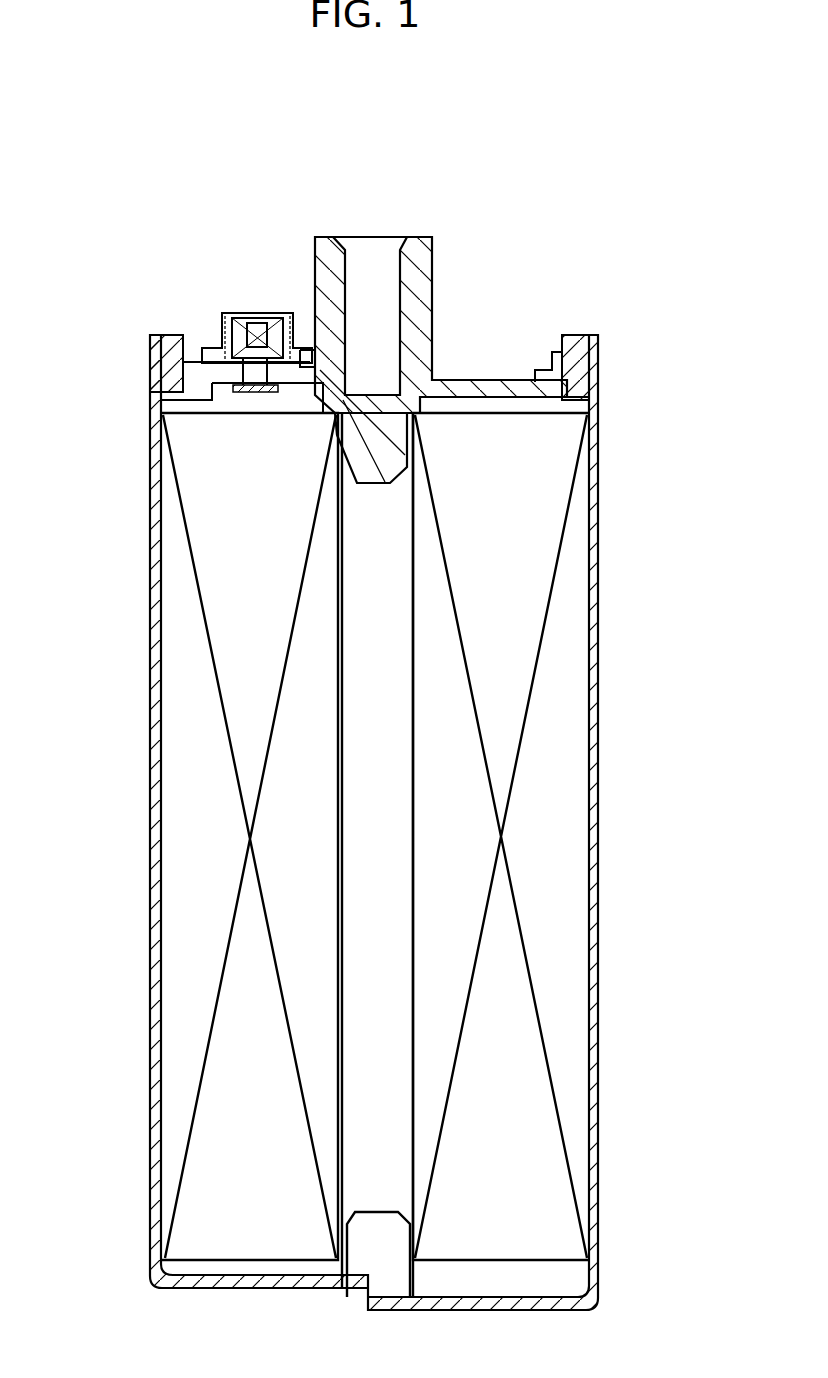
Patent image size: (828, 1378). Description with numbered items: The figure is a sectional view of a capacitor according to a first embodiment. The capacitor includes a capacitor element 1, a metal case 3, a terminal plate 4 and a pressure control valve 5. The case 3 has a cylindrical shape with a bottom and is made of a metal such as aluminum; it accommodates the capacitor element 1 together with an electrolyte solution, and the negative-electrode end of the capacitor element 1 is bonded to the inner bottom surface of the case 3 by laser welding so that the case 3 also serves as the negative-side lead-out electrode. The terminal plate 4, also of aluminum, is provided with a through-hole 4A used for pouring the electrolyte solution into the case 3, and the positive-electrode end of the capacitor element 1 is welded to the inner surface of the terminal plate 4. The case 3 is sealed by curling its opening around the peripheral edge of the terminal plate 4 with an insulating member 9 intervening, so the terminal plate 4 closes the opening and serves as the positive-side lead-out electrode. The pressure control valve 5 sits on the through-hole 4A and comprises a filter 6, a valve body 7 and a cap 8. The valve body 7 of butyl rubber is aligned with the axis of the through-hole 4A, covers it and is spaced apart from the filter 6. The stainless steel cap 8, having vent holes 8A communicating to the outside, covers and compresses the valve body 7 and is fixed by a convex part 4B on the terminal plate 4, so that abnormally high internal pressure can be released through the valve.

The capacitor element 1 is at (572, 580).
The metal case 3 is at (600, 840).
The terminal plate 4 is at (430, 300).
The through-hole 4A is at (245, 382).
The convex part 4B is at (308, 352).
The pressure control valve 5 is at (288, 307).
The filter 6 is at (248, 398).
The valve body 7 is at (245, 367).
The cap 8 is at (222, 335).
The vent holes 8A is at (222, 325).
The insulating member 9 is at (598, 352).